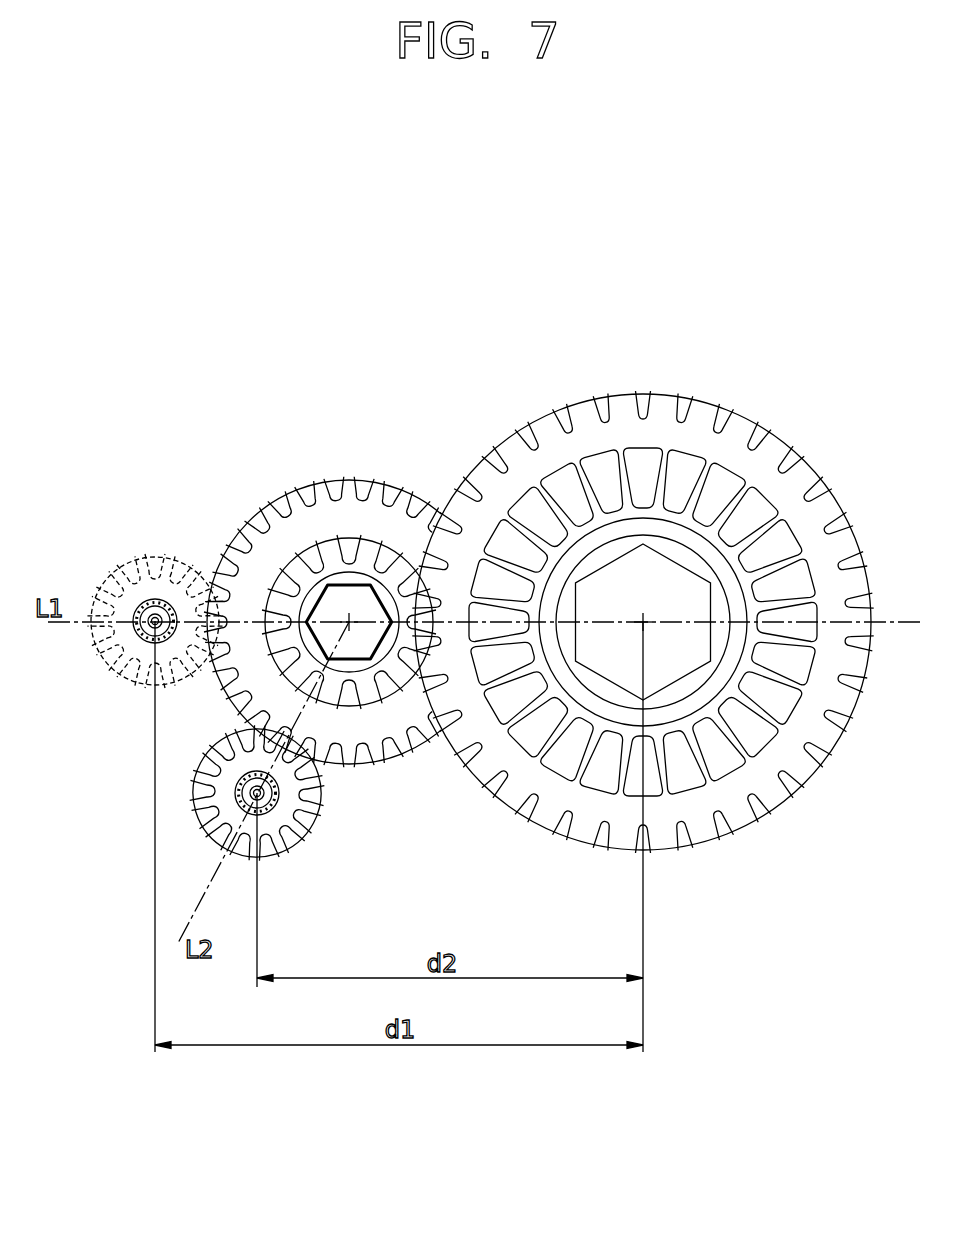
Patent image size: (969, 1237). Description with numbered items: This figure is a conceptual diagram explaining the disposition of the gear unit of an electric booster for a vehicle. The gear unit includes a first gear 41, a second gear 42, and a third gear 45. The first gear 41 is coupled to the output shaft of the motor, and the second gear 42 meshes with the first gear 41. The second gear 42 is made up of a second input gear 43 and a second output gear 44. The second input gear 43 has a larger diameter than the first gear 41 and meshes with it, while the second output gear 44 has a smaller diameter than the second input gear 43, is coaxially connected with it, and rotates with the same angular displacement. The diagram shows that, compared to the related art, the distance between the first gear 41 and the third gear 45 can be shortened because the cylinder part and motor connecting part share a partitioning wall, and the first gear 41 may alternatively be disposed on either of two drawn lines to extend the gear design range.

The first gear 41 is at (127, 562).
The second gear 42 is at (393, 428).
The second input gear 43 is at (331, 527).
The second output gear 44 is at (371, 558).
The third gear 45 is at (648, 430).